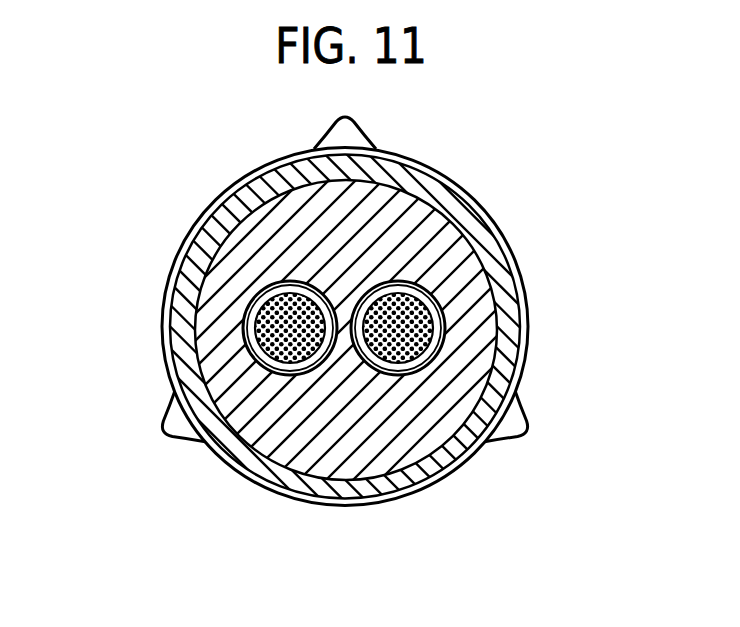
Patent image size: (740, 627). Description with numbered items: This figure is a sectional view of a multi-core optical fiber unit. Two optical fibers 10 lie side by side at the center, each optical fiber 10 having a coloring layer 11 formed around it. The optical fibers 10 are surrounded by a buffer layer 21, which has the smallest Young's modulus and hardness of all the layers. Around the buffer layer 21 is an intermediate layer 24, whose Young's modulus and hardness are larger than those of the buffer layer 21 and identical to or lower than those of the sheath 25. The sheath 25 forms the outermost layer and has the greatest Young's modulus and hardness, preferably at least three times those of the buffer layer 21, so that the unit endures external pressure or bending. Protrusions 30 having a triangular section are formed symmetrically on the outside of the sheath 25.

The optical fiber 10 is at (405, 300).
The coloring layer 11 is at (415, 290).
The buffer layer 21 is at (250, 222).
The intermediate layer 24 is at (292, 482).
The sheath 25 is at (525, 383).
The protrusion 30 is at (172, 413).